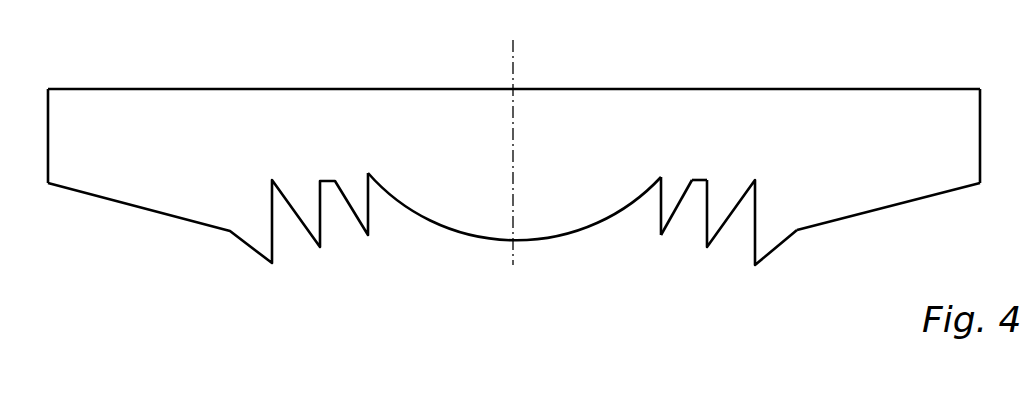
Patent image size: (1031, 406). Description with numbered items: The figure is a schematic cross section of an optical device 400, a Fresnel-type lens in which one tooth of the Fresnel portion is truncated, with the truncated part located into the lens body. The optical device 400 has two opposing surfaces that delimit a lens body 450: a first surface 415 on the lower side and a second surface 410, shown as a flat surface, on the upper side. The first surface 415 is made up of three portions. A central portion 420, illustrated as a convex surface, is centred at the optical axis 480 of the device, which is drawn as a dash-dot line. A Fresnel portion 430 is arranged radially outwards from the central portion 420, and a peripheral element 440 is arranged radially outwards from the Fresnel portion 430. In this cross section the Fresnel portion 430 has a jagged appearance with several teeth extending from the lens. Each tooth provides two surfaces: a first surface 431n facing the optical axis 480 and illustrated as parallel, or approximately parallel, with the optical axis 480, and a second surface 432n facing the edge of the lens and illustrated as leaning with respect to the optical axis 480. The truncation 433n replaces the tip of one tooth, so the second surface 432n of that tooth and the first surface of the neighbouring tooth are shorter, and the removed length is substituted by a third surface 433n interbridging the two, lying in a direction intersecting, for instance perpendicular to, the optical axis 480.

The optical device 400 is at (263, 40).
The second surface 410 is at (353, 88).
The first surface 415 is at (252, 250).
The central portion 420 is at (502, 242).
The Fresnel portion 430 is at (729, 254).
The first surface of a tooth 431n is at (660, 218).
The second surface of the tooth 432n is at (660, 218).
The truncation of the tooth 433n is at (697, 176).
The peripheral element 440 is at (857, 217).
The lens body 450 is at (905, 100).
The optical axis 480 is at (515, 55).